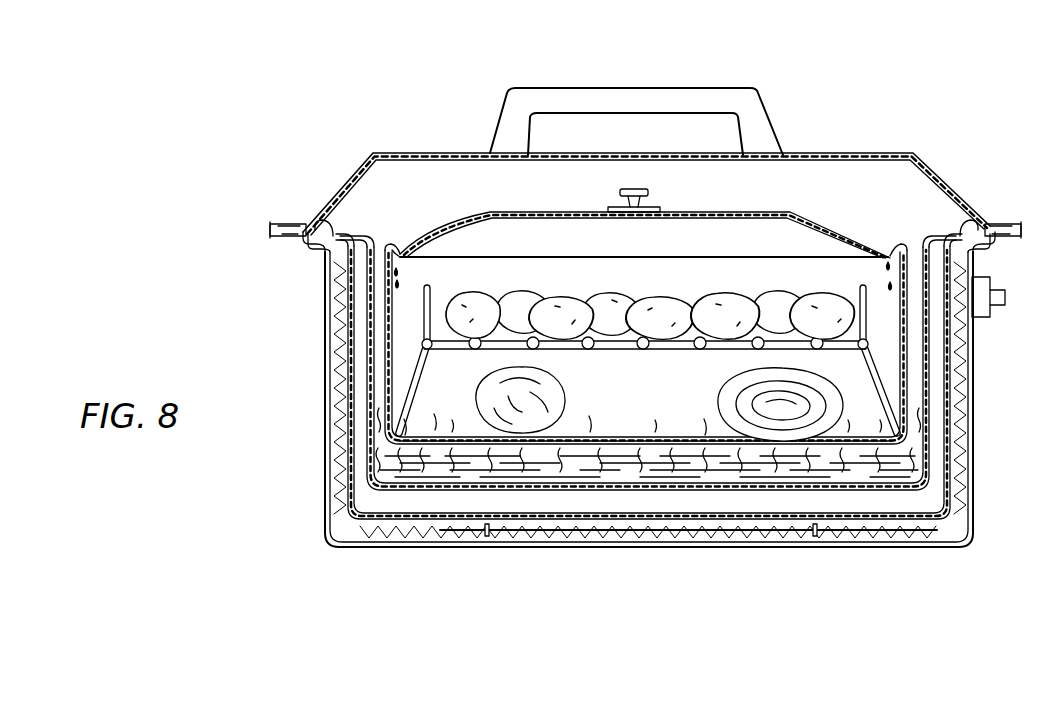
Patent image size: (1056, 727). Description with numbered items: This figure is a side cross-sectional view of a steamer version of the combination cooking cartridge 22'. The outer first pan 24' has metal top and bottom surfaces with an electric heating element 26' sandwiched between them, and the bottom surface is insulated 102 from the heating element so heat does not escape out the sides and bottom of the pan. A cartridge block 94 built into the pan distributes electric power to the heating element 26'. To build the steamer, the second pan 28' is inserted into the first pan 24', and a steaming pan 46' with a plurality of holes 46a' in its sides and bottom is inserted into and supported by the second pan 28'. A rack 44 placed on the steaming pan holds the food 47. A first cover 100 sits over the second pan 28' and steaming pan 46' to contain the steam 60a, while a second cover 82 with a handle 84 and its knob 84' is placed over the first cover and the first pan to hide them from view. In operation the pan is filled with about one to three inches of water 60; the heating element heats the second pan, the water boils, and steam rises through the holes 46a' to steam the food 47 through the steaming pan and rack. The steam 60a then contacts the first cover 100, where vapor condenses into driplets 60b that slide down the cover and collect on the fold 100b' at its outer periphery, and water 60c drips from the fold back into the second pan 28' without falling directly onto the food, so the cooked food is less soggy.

The combination cooking cartridge 22' is at (959, 592).
The first pan 24' is at (672, 389).
The heating element 26' is at (650, 422).
The second pan 28' is at (686, 363).
The rack 44 is at (714, 350).
The steaming pan 46' is at (707, 344).
The holes 46a' is at (646, 421).
The food 47 is at (549, 337).
The water 60 is at (876, 478).
The steam 60a is at (648, 429).
The driplets 60b is at (478, 233).
The water drips 60c is at (401, 289).
The second cover 82 is at (946, 184).
The handle 84 is at (636, 101).
The knob 84' is at (661, 192).
The cartridge block 94 is at (993, 288).
The first cover 100 is at (829, 220).
The fold on outer periphery of first cover 100b' is at (403, 227).
The insulation 102 is at (633, 548).